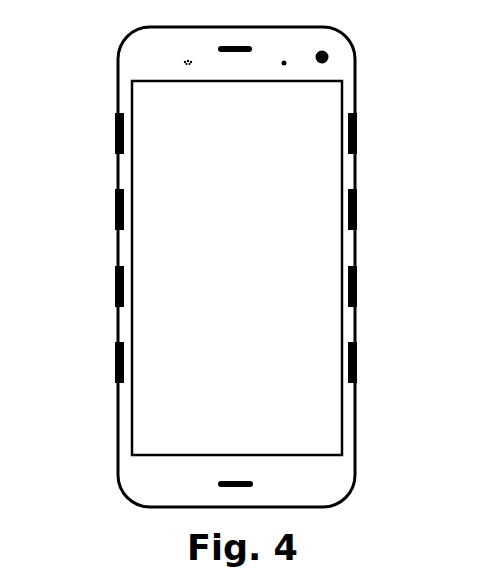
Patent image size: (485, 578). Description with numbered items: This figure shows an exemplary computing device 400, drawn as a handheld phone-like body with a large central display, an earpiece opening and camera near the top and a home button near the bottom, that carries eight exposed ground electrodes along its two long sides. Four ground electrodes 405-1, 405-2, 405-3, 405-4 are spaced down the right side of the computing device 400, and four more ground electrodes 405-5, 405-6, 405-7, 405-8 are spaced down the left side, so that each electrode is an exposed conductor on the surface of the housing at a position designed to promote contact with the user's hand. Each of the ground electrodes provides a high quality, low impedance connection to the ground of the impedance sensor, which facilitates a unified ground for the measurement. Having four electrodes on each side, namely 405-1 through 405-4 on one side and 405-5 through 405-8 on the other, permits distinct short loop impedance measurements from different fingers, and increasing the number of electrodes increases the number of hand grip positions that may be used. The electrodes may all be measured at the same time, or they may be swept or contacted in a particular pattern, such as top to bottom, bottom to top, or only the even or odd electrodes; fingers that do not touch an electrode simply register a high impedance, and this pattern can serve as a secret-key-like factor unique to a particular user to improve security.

The computing device 400 is at (345, 35).
The ground electrode 405-1 is at (356, 138).
The ground electrode 405-2 is at (356, 214).
The ground electrode 405-3 is at (356, 290).
The ground electrode 405-4 is at (356, 366).
The ground electrode 405-5 is at (115, 138).
The ground electrode 405-6 is at (115, 213).
The ground electrode 405-7 is at (115, 288).
The ground electrode 405-8 is at (115, 362).